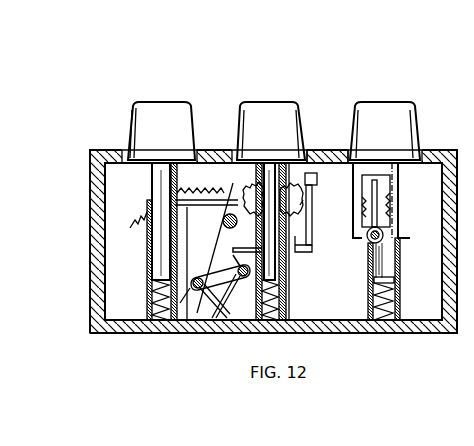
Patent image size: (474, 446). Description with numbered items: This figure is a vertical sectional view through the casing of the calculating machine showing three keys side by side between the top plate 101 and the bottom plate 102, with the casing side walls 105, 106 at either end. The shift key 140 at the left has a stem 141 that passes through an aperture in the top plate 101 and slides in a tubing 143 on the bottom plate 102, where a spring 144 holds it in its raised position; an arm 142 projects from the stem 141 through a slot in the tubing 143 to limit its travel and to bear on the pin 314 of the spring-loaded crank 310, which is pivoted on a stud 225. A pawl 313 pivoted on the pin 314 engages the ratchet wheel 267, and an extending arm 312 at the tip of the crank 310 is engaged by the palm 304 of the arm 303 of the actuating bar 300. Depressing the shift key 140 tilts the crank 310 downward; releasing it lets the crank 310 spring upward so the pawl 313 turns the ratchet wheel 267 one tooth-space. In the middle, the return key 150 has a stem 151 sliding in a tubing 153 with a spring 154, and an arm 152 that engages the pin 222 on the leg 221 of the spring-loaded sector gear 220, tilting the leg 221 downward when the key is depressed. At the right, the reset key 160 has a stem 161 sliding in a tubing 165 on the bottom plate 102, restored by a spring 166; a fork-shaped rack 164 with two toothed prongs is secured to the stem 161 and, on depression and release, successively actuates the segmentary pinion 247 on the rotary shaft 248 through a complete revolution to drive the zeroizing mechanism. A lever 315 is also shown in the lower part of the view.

The top plate 101 is at (323, 158).
The bottom plate 102 is at (337, 328).
The housing left wall 105 is at (96, 210).
The housing right wall 106 is at (449, 302).
The shift key 140 is at (172, 115).
The stem 141 is at (152, 181).
The arm 142 is at (198, 203).
The tubing 143 is at (149, 255).
The spring 144 is at (153, 305).
The return key 150 is at (275, 118).
The stem 151 is at (263, 187).
The arm 152 is at (218, 290).
The tubing 153 is at (285, 290).
The spring 154 is at (277, 305).
The reset key 160 is at (388, 115).
The stem 161 is at (389, 252).
The fork-shaped rack 164 is at (391, 192).
The tubing 165 is at (398, 235).
The spring 166 is at (391, 287).
The sector gear 220 is at (147, 230).
The leg 221 is at (240, 335).
The pin 222 is at (228, 296).
The stud 225 is at (180, 303).
The segmentary pinion 247 is at (301, 206).
The rotary shaft 248 is at (368, 241).
The ratchet wheel 267 is at (283, 190).
The actuating bar 300 is at (327, 177).
The arm 303 is at (350, 203).
The palm 304 is at (305, 251).
The crank 310 is at (221, 243).
The extending arm 312 is at (290, 247).
The pawl 313 is at (246, 198).
The pin 314 is at (224, 224).
The lever 315 is at (210, 280).